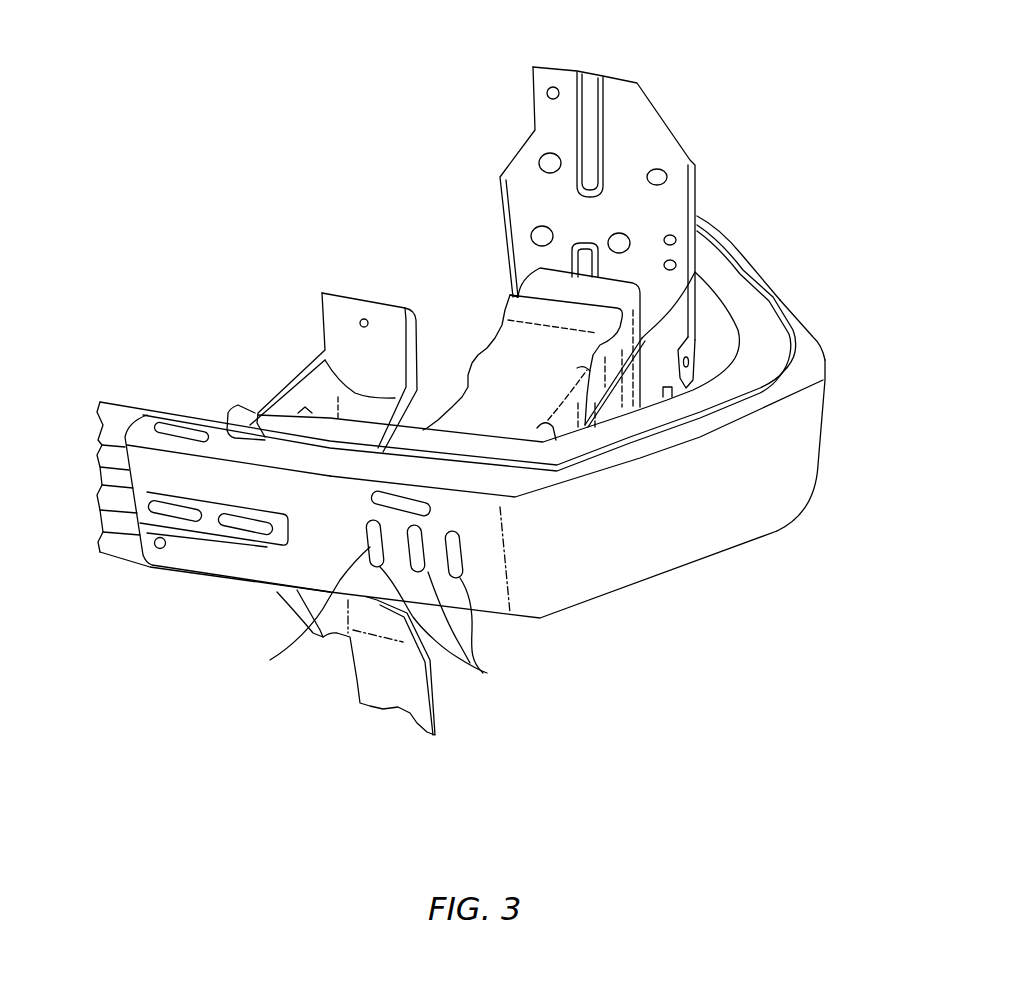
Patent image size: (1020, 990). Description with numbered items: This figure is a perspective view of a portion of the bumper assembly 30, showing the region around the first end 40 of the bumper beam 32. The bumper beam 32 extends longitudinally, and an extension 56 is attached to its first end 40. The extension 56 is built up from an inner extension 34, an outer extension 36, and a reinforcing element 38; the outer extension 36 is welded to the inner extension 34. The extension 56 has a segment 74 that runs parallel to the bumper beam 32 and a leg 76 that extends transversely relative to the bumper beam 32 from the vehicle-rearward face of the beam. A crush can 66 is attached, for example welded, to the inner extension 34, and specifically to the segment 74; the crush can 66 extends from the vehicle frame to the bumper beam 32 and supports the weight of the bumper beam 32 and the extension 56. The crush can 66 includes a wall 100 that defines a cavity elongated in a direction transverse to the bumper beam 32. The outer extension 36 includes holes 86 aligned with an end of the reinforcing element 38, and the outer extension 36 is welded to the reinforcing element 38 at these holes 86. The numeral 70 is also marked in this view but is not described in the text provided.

The bumper assembly 30 is at (694, 689).
The bumper beam 32 is at (120, 557).
The inner extension 34 is at (803, 335).
The outer extension 36 is at (826, 400).
The reinforcing element 38 is at (330, 628).
The first end 40 is at (222, 407).
The extension 56 is at (875, 282).
The crush can 66 is at (482, 357).
The beam end portion 70 is at (110, 500).
The segment 74 is at (213, 590).
The leg 76 is at (650, 580).
The holes 86 is at (487, 673).
The wall 100 is at (615, 331).